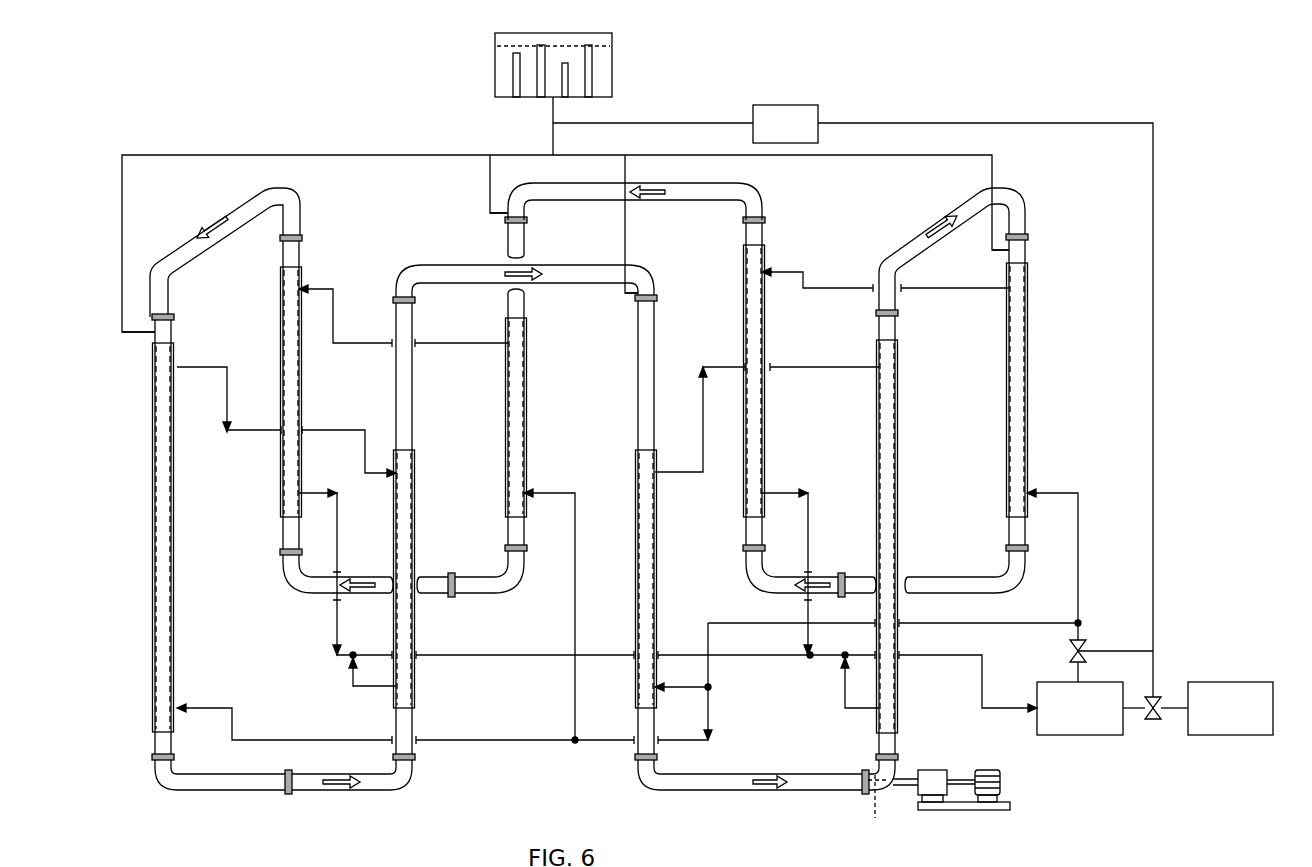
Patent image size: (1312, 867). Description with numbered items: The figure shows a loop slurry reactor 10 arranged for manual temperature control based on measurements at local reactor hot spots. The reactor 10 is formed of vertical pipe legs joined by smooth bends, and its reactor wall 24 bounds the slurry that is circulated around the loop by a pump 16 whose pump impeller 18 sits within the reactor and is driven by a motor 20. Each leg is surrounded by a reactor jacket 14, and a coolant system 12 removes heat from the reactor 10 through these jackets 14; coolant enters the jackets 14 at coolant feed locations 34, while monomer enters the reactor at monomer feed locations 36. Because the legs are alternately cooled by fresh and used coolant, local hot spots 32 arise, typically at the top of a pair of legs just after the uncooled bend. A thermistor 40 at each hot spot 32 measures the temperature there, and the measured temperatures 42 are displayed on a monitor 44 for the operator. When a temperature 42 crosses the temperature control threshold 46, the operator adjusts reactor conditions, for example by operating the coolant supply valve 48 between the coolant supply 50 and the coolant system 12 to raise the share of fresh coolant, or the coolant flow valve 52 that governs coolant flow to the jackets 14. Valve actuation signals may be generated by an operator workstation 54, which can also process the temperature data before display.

The loop slurry reactor 10 is at (1060, 184).
The coolant system 12 is at (1083, 735).
The reactor jackets 14 is at (285, 495).
The pump 16 is at (933, 768).
The pump impeller 18 is at (875, 818).
The motor 20 is at (1000, 783).
The reactor wall 24 is at (700, 194).
The local hot spots 32 is at (170, 340).
The coolant feed locations 34 is at (212, 710).
The monomer feed locations 36 is at (283, 542).
The thermistor 40 is at (133, 332).
The temperatures 42 is at (540, 97).
The monitor 44 is at (495, 72).
The temperature control threshold 46 is at (607, 47).
The coolant supply valve 48 is at (1156, 720).
The coolant supply 50 is at (1243, 735).
The coolant flow valve 52 is at (1084, 639).
The operator workstation 54 is at (778, 105).